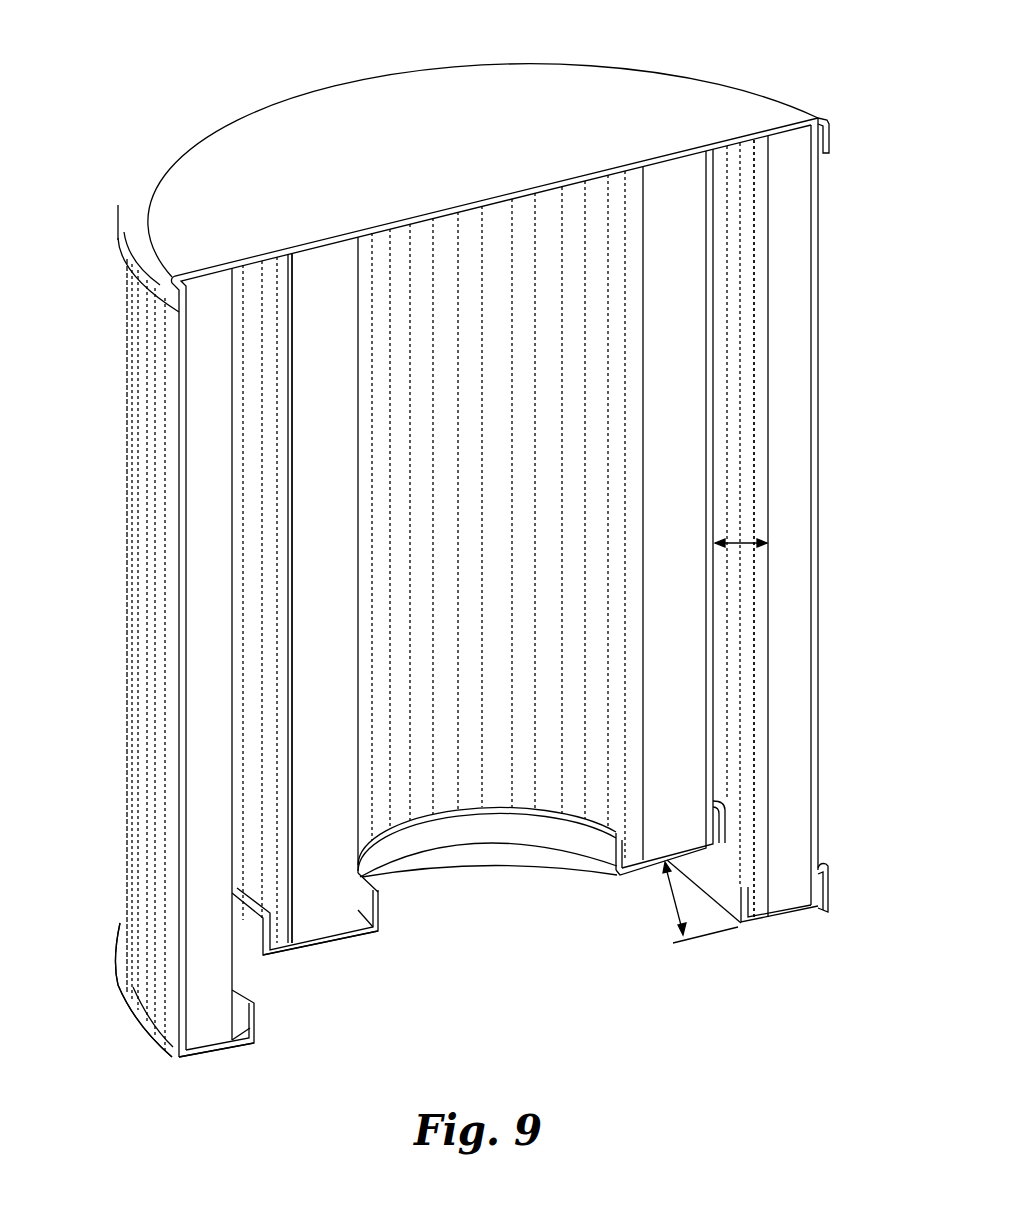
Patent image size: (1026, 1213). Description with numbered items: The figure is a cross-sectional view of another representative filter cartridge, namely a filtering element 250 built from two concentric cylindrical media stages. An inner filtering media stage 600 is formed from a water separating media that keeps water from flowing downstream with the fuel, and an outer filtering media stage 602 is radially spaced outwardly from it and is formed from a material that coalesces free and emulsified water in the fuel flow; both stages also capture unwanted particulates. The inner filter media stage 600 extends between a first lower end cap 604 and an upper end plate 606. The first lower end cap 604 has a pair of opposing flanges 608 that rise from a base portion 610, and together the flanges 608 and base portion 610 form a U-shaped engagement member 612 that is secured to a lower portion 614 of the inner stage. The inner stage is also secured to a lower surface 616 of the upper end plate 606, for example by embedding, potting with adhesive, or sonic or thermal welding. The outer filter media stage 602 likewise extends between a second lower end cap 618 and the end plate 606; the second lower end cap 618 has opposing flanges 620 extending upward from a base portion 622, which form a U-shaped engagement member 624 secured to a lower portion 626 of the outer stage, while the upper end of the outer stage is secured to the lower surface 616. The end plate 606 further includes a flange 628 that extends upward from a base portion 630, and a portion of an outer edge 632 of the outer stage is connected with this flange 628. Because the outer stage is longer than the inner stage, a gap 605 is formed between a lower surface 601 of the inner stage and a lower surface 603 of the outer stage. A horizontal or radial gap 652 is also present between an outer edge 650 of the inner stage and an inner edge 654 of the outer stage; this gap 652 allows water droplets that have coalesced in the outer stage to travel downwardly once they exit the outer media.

The filtering element 250 is at (492, 968).
The inner filtering media stage 600 is at (310, 487).
The lower surface of inner filter media stage 601 is at (657, 873).
The outer filtering media stage 602 is at (200, 612).
The lower surface of outer filter media stage 603 is at (819, 912).
The first lower end cap 604 is at (290, 975).
The gap 605 is at (668, 898).
The upper end plate 606 is at (284, 139).
The flanges 608 is at (250, 917).
The base portion 610 is at (300, 947).
The U-shaped engagement member 612 is at (338, 922).
The lower portion of inner filter media stage 614 is at (315, 923).
The lower surface of upper end plate 616 is at (432, 212).
The second lower end cap 618 is at (165, 1077).
The flanges 620 is at (138, 1017).
The base portion 622 is at (213, 1058).
The U-shaped engagement member 624 is at (808, 908).
The lower portion of outer filter media stage 626 is at (772, 923).
The flange 628 is at (137, 262).
The base portion 630 is at (697, 105).
The outer edge of outer filter media stage 632 is at (828, 152).
The outer edge of inner filter media stage 650 is at (715, 388).
The horizontal gap 652 is at (750, 610).
The inner edge of outer filter media stage 654 is at (767, 477).